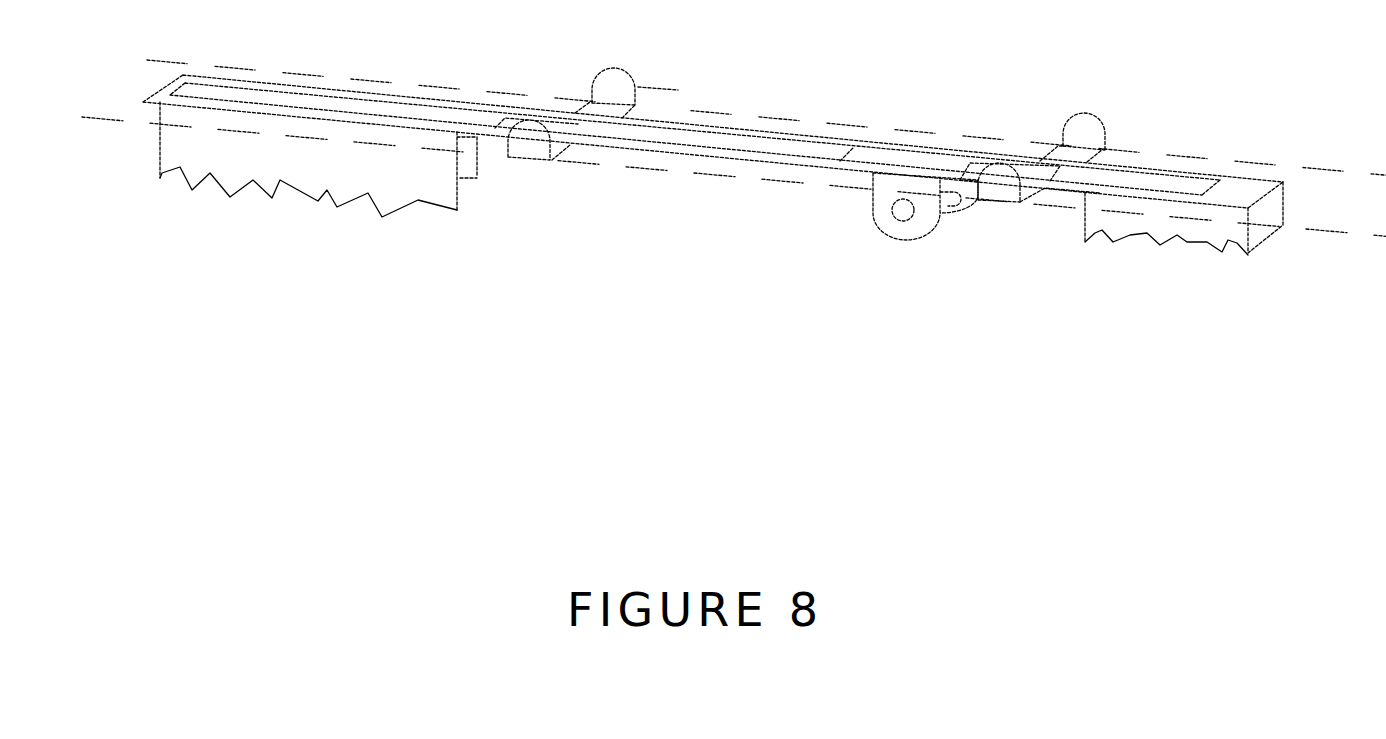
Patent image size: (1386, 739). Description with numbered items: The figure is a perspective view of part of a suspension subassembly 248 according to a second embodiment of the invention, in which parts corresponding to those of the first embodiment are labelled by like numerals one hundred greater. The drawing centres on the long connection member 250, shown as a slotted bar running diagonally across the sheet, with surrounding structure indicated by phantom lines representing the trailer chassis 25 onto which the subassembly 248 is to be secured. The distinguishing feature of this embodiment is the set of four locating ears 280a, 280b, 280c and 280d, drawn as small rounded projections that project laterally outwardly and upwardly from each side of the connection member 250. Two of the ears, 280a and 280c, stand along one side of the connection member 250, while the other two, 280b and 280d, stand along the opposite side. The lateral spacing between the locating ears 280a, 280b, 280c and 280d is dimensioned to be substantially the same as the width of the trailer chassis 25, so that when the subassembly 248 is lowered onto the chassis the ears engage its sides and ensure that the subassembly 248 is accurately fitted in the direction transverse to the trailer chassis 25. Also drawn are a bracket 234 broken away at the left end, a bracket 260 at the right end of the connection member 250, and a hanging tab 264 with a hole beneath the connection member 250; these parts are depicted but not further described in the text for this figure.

The trailer chassis 25 is at (1247, 160).
The left mounting bracket 234 is at (178, 150).
The subassembly 248 is at (350, 257).
The connection member 250 is at (873, 143).
The right mounting bracket 260 is at (1265, 206).
The pivot tab with hole 264 is at (883, 207).
The locating ear 280a is at (633, 73).
The locating ear 280b is at (540, 148).
The locating ear 280c is at (1107, 128).
The locating ear 280d is at (1022, 202).